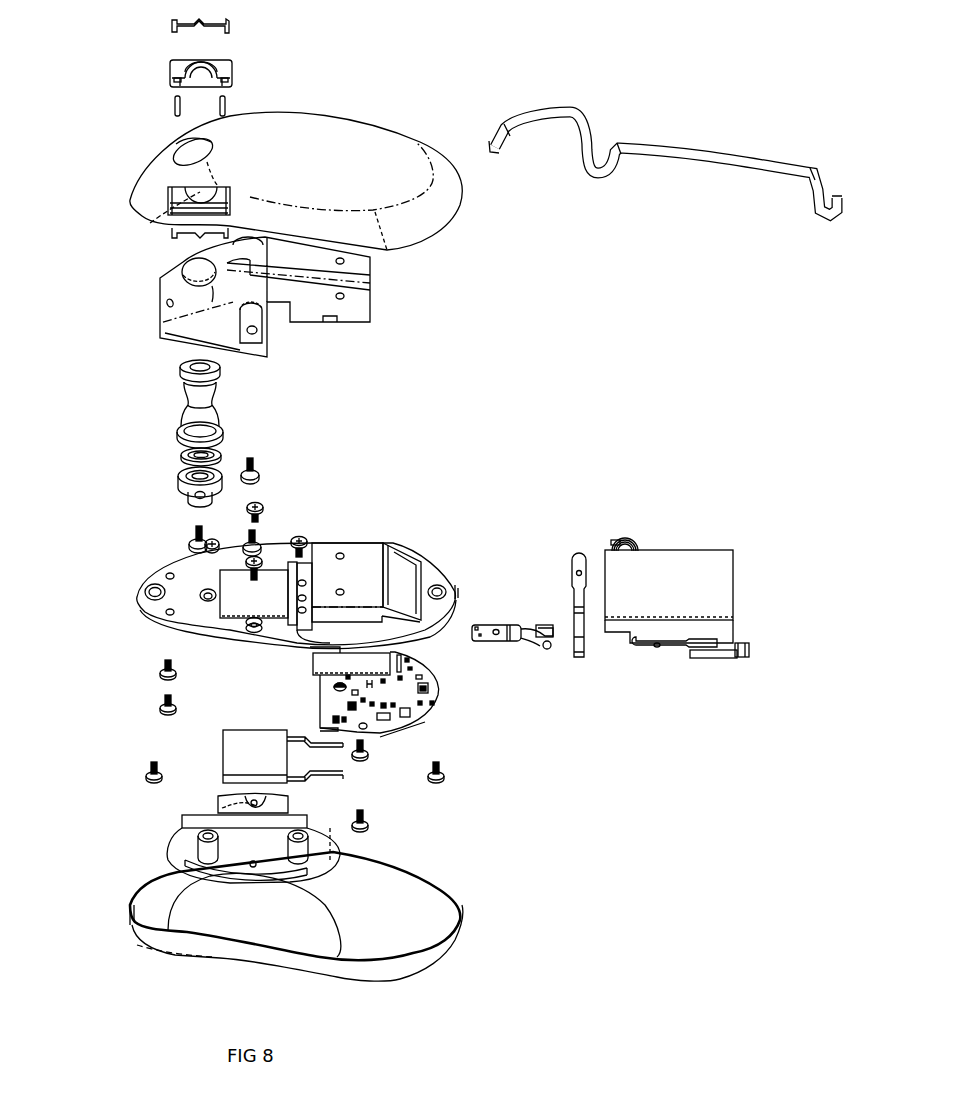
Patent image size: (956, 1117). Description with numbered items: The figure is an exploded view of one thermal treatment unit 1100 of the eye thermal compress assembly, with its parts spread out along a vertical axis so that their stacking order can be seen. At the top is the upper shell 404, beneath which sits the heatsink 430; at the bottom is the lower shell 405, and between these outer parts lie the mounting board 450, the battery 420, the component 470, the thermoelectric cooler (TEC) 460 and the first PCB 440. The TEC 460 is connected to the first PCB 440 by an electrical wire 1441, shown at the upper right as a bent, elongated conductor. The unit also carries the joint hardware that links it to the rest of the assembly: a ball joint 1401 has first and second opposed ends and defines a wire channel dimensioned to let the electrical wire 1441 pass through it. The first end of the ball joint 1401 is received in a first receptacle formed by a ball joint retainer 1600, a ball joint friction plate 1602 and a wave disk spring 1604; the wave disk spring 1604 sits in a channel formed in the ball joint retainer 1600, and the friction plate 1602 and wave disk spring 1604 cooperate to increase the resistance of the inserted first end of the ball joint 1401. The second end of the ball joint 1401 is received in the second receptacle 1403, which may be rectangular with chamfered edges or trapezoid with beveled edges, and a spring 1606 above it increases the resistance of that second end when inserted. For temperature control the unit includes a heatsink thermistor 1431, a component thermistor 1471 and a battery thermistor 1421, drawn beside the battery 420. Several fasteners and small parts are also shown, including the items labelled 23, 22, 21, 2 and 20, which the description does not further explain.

The thermal treatment unit 1100 is at (556, 866).
The spring 1606 is at (170, 29).
The second receptacle 1403 is at (170, 66).
The pins 23 is at (231, 101).
The upper shell 404 is at (147, 164).
The heatsink 430 is at (162, 285).
The electrical wire 1441 is at (540, 128).
The ball joint 1401 is at (178, 407).
The ball joint friction plate 1602 is at (172, 432).
The wave disk spring 1604 is at (175, 455).
The ball joint retainer 1600 is at (173, 488).
The screw 22 is at (188, 533).
The washer 21 is at (205, 551).
The mounting board 450 is at (133, 612).
The component thermistor 1471 is at (538, 622).
The heatsink thermistor 1431 is at (579, 553).
The battery 420 is at (740, 565).
The battery thermistor 1421 is at (752, 656).
The power block 2 is at (311, 663).
The first PCB 440 is at (318, 713).
The screw 20 is at (143, 785).
The thermoelectric cooler (TEC) 460 is at (218, 788).
The component 470 is at (164, 852).
The lower shell 405 is at (134, 943).